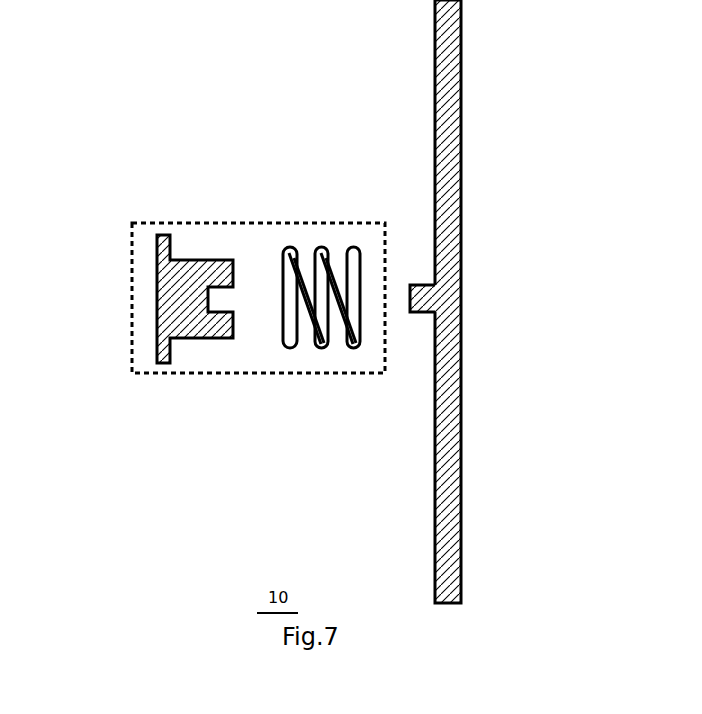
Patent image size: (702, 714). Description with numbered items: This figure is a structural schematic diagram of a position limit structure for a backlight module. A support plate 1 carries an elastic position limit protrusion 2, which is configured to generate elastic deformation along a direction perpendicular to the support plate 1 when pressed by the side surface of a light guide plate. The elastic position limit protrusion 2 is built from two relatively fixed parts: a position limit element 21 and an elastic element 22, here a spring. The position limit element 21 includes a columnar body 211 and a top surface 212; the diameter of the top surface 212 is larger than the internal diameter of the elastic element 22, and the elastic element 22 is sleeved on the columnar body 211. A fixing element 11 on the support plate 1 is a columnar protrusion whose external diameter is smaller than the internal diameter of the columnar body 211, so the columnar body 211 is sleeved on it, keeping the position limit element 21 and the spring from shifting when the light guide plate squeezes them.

The support plate 1 is at (461, 474).
The fixing element 11 is at (428, 285).
The elastic position limit protrusion 2 is at (258, 222).
The position limit element 21 is at (146, 360).
The columnar body 211 is at (197, 338).
The top surface 212 is at (157, 308).
The elastic element 22 is at (322, 350).